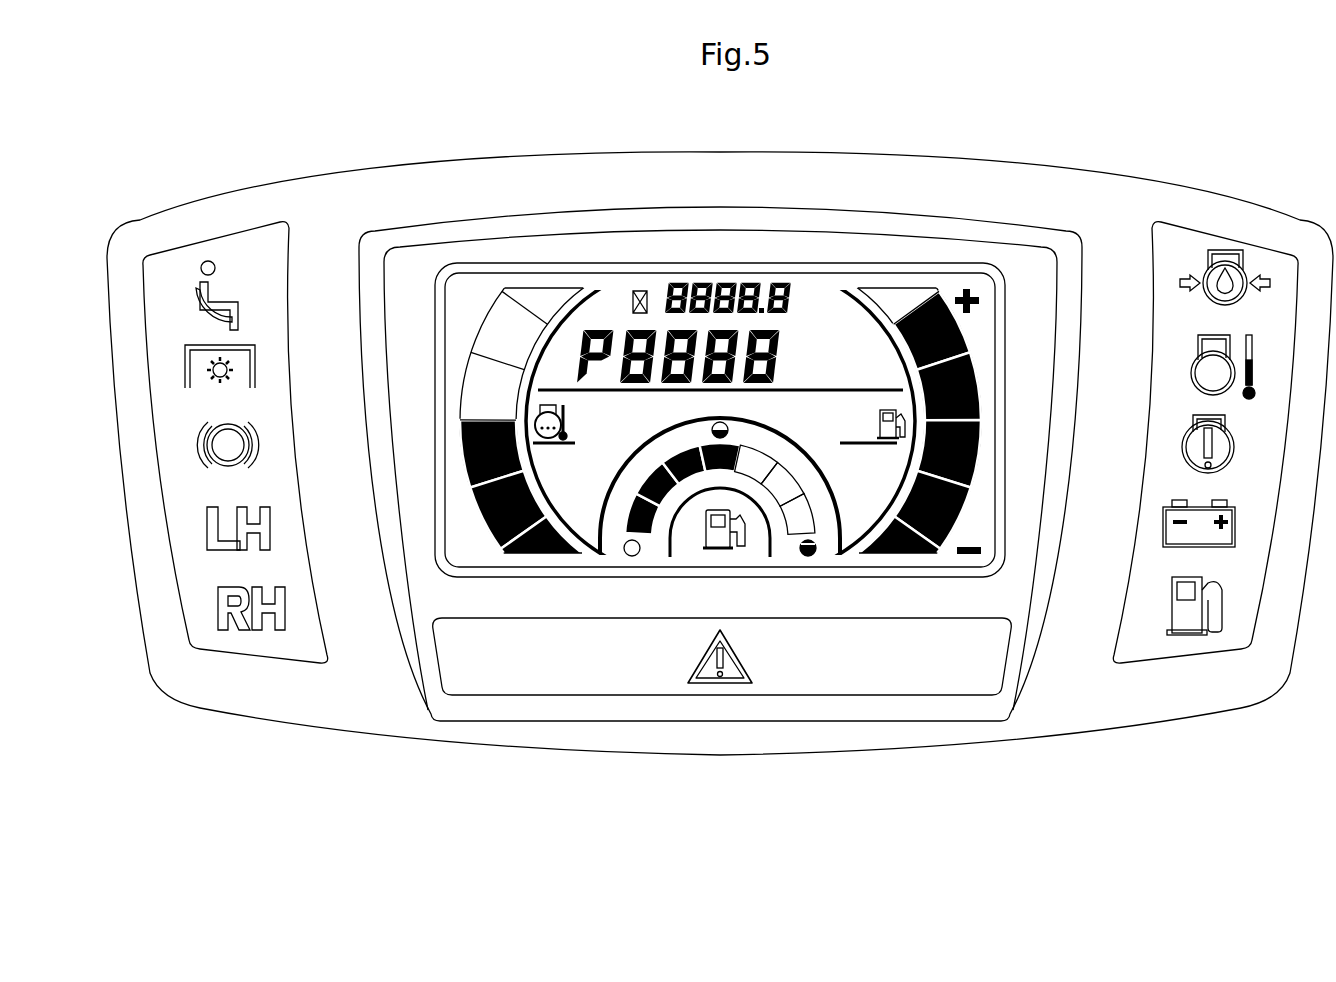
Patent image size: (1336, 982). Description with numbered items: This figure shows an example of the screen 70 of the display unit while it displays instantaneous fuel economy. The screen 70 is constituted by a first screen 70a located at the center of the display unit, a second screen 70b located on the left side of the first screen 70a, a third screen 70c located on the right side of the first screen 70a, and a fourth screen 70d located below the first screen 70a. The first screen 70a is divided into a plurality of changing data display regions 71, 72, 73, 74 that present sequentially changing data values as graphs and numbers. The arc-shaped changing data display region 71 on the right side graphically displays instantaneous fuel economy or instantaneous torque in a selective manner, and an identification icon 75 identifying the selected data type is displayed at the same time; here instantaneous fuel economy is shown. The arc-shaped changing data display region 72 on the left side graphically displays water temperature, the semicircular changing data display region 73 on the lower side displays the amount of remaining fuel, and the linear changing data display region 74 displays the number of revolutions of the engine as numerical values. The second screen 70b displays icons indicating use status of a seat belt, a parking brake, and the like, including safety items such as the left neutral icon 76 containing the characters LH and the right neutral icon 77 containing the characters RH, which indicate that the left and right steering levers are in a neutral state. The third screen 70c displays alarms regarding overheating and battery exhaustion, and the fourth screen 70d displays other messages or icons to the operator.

The screen 70 is at (720, 453).
The first screen 70a is at (859, 210).
The second screen 70b is at (196, 409).
The third screen 70c is at (1259, 260).
The fourth screen 70d is at (824, 700).
The changing data display region 71 is at (970, 348).
The changing data display region 72 is at (550, 283).
The changing data display region 73 is at (660, 545).
The changing data display region 74 is at (615, 309).
The identification icon 75 is at (884, 450).
The left neutral icon 76 is at (200, 533).
The right neutral icon 77 is at (205, 612).